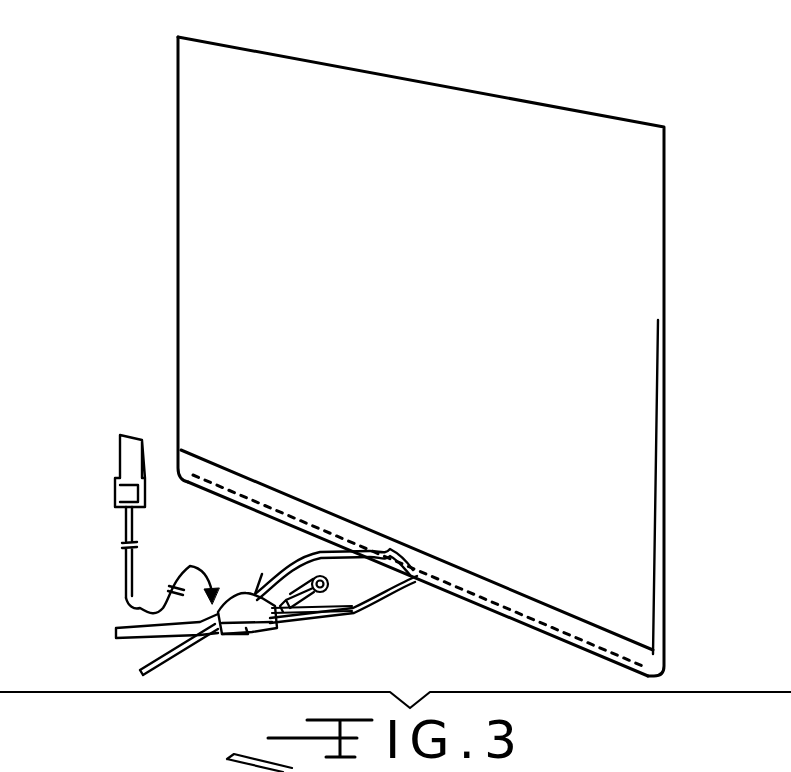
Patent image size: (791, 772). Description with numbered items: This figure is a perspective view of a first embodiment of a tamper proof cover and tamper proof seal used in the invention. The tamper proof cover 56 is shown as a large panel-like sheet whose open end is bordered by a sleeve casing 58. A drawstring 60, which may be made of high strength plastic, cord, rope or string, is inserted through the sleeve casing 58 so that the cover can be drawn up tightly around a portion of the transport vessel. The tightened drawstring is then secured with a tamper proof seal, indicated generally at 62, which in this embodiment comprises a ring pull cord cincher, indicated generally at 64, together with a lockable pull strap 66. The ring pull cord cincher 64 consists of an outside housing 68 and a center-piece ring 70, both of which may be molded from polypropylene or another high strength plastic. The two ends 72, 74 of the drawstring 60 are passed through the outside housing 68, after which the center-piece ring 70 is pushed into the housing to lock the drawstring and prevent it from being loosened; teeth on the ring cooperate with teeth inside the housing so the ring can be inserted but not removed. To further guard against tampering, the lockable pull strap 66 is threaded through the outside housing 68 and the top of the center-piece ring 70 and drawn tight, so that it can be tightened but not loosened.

The tamper proof cover 56 is at (579, 446).
The sleeve casing 58 is at (618, 646).
The drawstring 60 is at (382, 593).
The tamper proof seal 62 is at (280, 631).
The ring pull cord cincher 64 is at (261, 568).
The lockable pull strap 66 is at (124, 494).
The outside housing 68 is at (247, 634).
The center-piece ring 70 is at (347, 597).
The end of the drawstring 72 is at (126, 627).
The end of the drawstring 74 is at (142, 665).